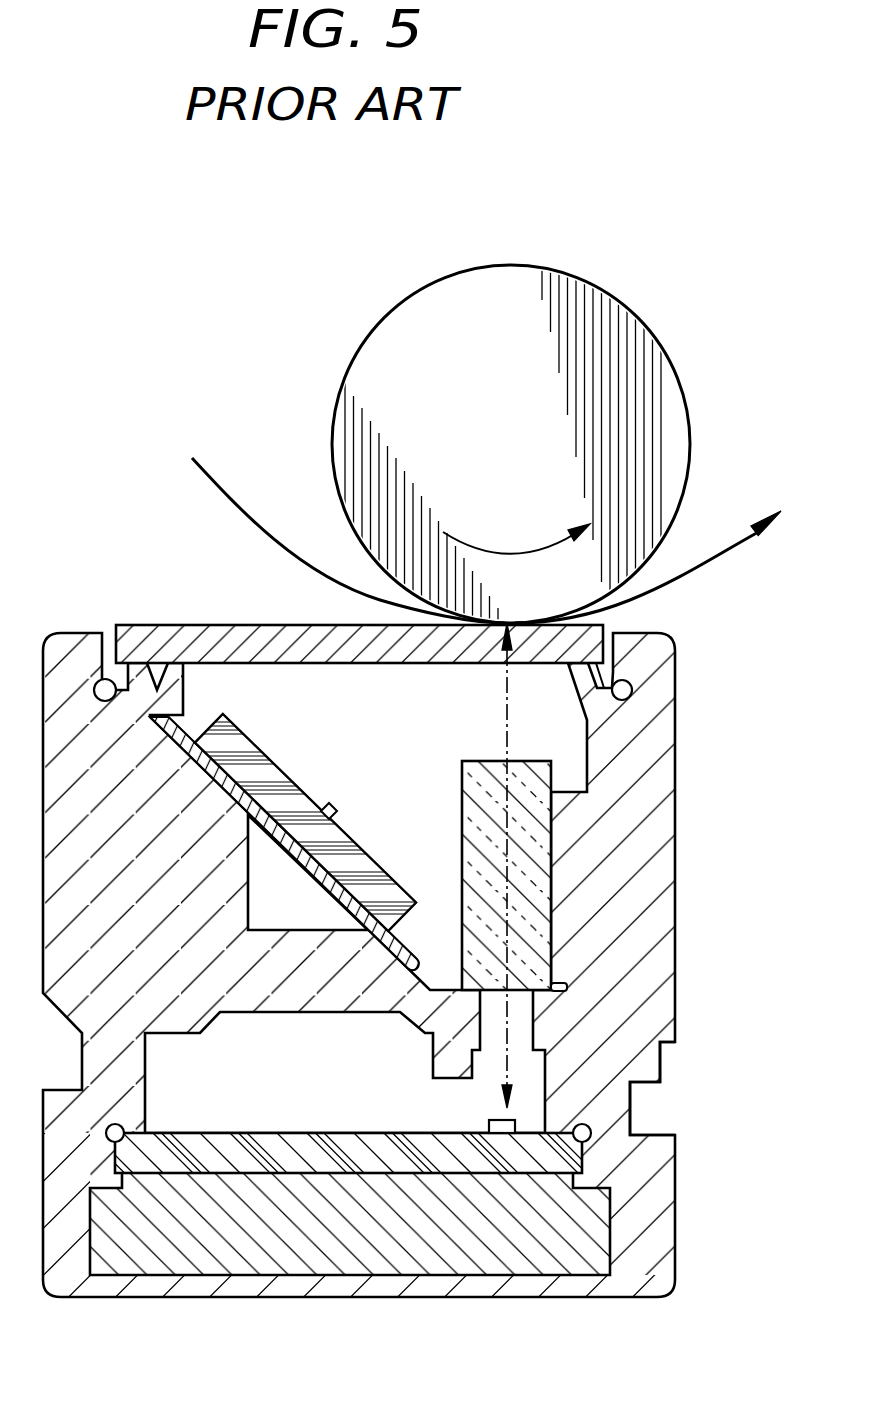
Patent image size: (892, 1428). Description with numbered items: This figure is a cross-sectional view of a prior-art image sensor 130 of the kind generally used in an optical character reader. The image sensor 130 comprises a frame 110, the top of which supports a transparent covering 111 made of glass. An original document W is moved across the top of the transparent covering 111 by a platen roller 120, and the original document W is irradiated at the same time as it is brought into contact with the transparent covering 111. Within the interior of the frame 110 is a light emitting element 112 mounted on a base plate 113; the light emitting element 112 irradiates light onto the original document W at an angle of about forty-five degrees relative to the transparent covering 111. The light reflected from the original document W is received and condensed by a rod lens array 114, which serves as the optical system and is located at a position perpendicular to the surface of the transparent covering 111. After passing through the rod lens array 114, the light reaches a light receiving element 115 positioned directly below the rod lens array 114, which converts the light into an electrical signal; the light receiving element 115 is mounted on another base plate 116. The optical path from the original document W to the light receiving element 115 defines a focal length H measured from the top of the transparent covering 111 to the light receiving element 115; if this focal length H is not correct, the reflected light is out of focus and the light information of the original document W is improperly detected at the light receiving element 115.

The frame 110 is at (617, 952).
The transparent covering 111 is at (190, 633).
The light emitting element 112 is at (352, 788).
The base plate 113 is at (253, 774).
The rod lens array 114 is at (492, 862).
The light receiving element 115 is at (495, 1118).
The base plate 116 is at (253, 1150).
The platen roller 120 is at (373, 372).
The image sensor 130 is at (675, 1022).
The original document W is at (283, 547).
The focal length H is at (507, 742).